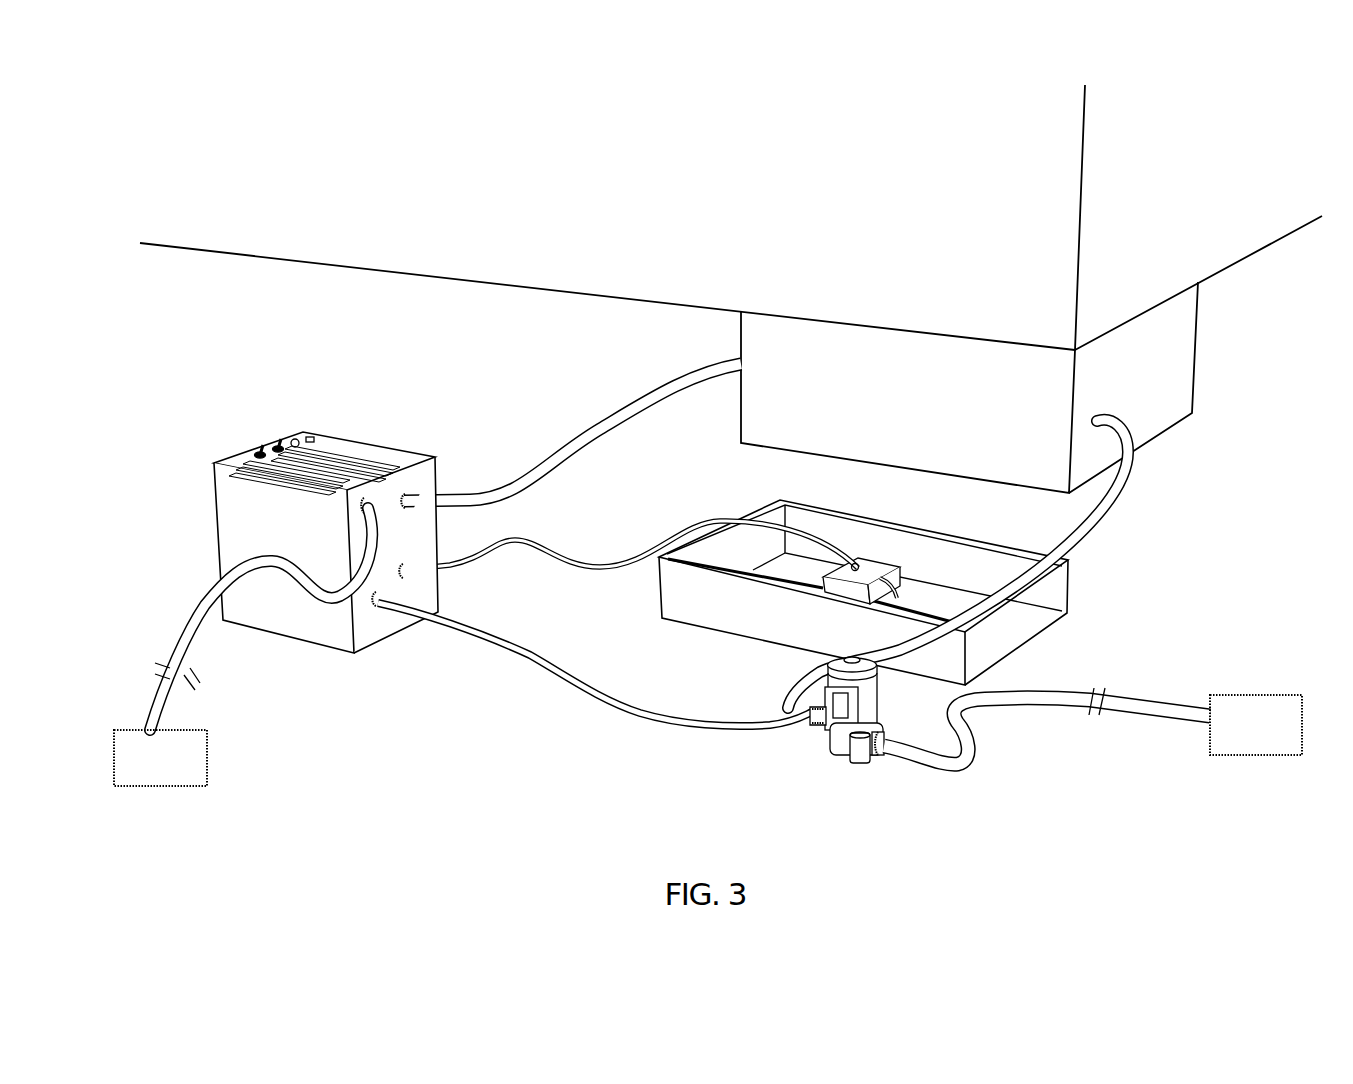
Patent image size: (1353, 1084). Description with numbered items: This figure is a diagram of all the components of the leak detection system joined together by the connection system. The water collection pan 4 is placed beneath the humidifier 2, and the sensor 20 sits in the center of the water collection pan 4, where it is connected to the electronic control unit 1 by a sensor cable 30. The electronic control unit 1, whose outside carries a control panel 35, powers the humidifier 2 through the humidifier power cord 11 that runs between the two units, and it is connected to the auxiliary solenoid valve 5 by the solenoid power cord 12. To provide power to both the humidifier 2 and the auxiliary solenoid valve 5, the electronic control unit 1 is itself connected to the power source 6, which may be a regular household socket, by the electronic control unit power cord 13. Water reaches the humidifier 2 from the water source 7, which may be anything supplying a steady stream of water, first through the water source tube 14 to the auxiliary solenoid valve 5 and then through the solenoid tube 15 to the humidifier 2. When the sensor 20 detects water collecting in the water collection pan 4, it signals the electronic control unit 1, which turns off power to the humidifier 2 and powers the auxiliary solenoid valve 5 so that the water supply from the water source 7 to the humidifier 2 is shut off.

The electronic control unit 1 is at (383, 655).
The humidifier 2 is at (912, 417).
The water collection pan 4 is at (688, 608).
The auxiliary solenoid valve 5 is at (877, 762).
The power source 6 is at (207, 770).
The water source 7 is at (1250, 755).
The humidifier power cord 11 is at (616, 415).
The solenoid power cord 12 is at (613, 700).
The electronic control unit power cord 13 is at (186, 651).
The water source tube 14 is at (1008, 697).
The solenoid tube 15 is at (1098, 517).
The sensor 20 is at (823, 587).
The sensor cable 30 is at (580, 560).
The control panel 35 is at (257, 453).